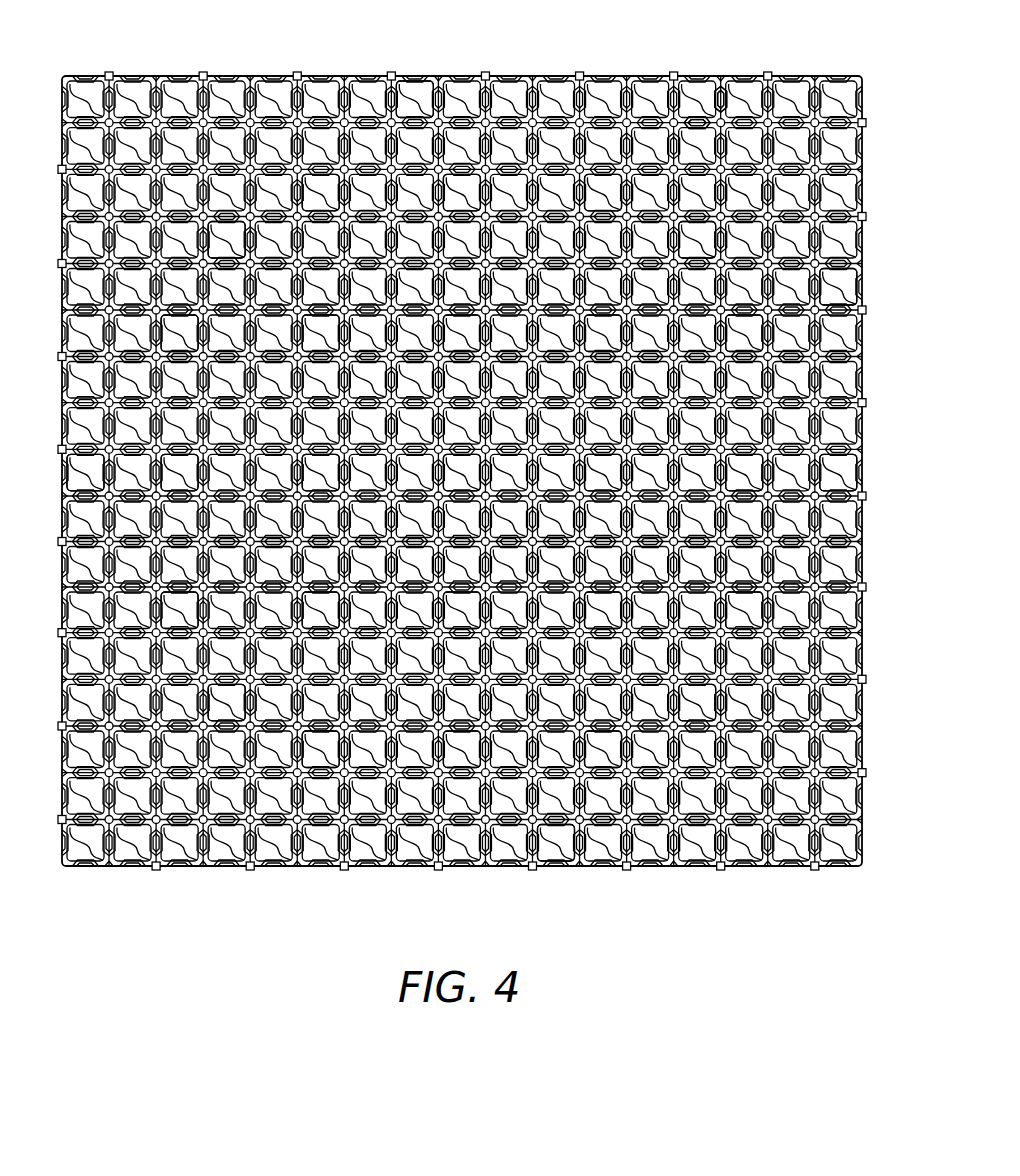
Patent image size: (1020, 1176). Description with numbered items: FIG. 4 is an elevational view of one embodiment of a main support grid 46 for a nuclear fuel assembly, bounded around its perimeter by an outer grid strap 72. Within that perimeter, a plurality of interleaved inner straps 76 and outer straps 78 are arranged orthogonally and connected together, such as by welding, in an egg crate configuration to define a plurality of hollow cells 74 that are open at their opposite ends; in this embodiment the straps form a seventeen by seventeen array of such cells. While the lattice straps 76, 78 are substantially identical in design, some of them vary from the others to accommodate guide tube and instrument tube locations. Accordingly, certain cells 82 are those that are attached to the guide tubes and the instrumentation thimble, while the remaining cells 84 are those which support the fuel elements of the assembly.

The main support grid 46 is at (464, 24).
The outer grid strap 72 is at (863, 565).
The hollow cells 74 is at (838, 287).
The inner straps 76 is at (704, 120).
The outer straps 78 is at (727, 98).
The cells attached to guide tubes and instrumentation thimble 82 is at (334, 205).
The remaining cells 84 is at (420, 98).